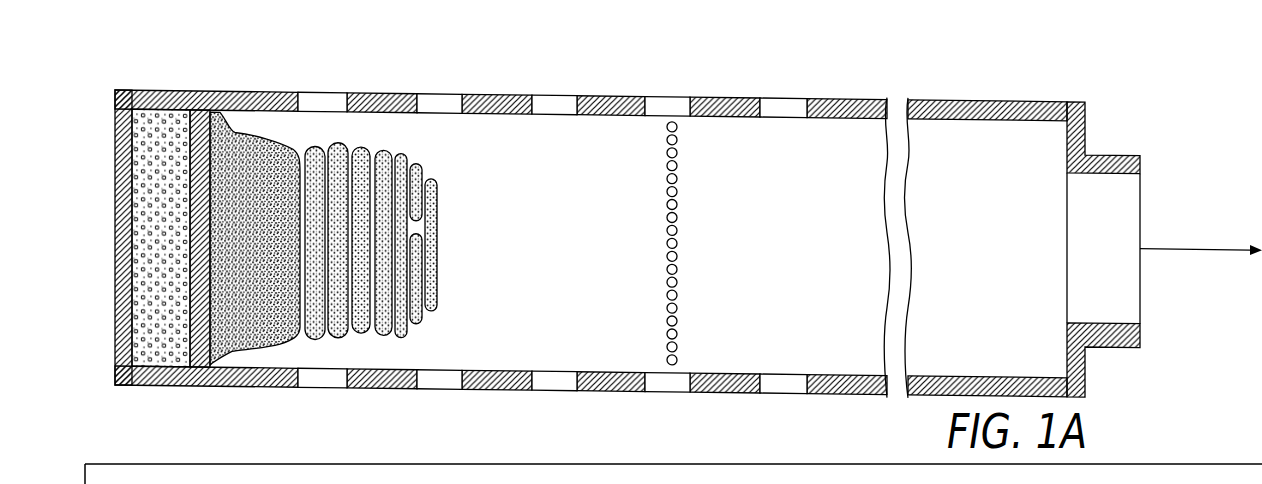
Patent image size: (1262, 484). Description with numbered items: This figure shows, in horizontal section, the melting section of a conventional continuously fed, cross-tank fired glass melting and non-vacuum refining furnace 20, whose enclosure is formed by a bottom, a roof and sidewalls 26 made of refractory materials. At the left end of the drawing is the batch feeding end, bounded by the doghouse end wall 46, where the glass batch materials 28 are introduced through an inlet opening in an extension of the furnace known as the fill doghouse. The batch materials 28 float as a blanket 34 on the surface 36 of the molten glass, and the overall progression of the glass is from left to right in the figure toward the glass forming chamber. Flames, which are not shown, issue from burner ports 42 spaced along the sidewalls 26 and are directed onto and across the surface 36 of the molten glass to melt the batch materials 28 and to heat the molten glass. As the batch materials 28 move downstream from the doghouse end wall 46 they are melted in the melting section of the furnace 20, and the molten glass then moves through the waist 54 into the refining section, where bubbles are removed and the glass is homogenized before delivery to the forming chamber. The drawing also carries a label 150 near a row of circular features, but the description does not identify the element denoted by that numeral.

The glass melting and non-vacuum refining furnace 20 is at (842, 70).
The sidewalls 26 is at (607, 391).
The glass batch materials 28 is at (363, 146).
The blanket 34 is at (438, 247).
The surface 36 is at (570, 266).
The burner ports 42 is at (325, 93).
The doghouse end wall 46 is at (115, 243).
The waist 54 is at (1107, 155).
The ring stack 150 is at (678, 206).